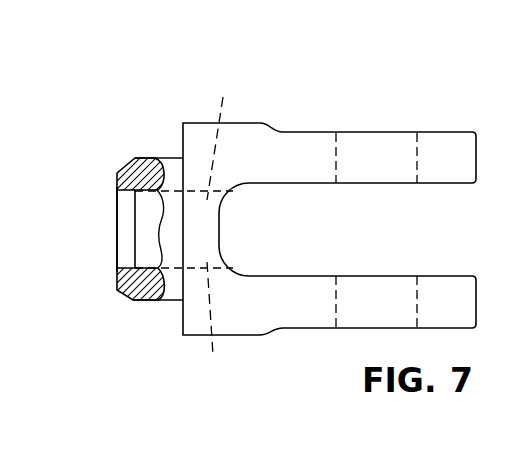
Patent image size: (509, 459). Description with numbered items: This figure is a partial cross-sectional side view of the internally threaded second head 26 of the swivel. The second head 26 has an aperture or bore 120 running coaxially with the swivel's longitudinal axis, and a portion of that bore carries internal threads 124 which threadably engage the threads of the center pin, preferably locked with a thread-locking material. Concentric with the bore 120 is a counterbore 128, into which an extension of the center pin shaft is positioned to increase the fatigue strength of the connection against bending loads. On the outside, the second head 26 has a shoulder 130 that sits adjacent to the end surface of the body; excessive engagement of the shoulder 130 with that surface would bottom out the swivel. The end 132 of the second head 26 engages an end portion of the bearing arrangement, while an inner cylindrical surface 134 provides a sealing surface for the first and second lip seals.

The second head 26 is at (365, 112).
The shoulder 130 is at (183, 136).
The internal threads 124 is at (233, 136).
The bore 120 is at (218, 324).
The end 132 is at (117, 178).
The counterbore 128 is at (123, 268).
The inner cylindrical surface 134 is at (149, 302).